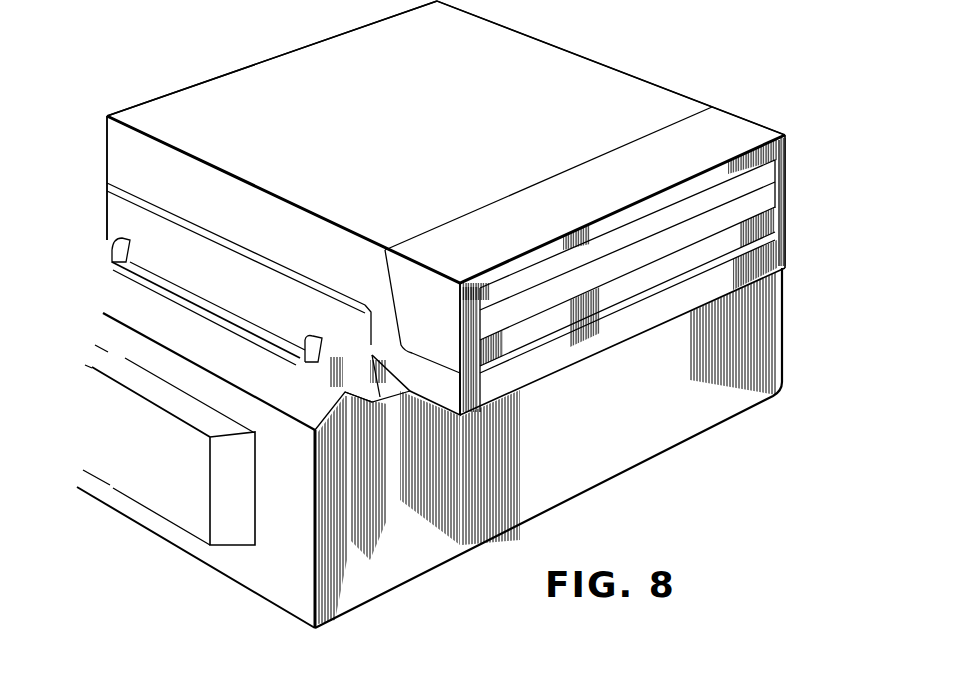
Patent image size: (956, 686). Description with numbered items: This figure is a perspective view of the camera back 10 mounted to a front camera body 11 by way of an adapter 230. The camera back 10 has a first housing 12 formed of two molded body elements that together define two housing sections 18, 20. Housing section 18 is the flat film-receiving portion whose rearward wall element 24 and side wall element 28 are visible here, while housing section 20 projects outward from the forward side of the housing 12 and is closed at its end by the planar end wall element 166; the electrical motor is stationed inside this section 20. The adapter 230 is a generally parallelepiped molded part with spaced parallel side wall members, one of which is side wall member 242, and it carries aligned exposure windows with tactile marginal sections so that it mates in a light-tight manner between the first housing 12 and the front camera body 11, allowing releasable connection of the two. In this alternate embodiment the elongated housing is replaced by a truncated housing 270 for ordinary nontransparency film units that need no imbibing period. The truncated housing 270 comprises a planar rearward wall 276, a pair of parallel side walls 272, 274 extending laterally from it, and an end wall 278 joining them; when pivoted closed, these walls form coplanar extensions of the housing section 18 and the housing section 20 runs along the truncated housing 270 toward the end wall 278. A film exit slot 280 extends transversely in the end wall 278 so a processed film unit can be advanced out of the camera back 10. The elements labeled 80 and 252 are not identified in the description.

The camera back apparatus 10 is at (653, 80).
The front camera body apparatus 11 is at (664, 461).
The first housing 12 is at (101, 130).
The housing section 18 is at (240, 66).
The housing section 20 is at (430, 403).
The rearward wall element 24 is at (540, 60).
The side wall element 28 is at (262, 213).
The upper element 80 is at (731, 0).
The end wall element 166 is at (452, 392).
The adapter 230 is at (105, 212).
The side wall member 242 is at (165, 235).
The front support lip 252 is at (377, 400).
The truncated housing 270 is at (741, 139).
The side wall 272 is at (795, 155).
The side wall 274 is at (420, 293).
The rearward wall 276 is at (578, 185).
The end wall 278 is at (493, 352).
The film exit slot 280 is at (717, 208).